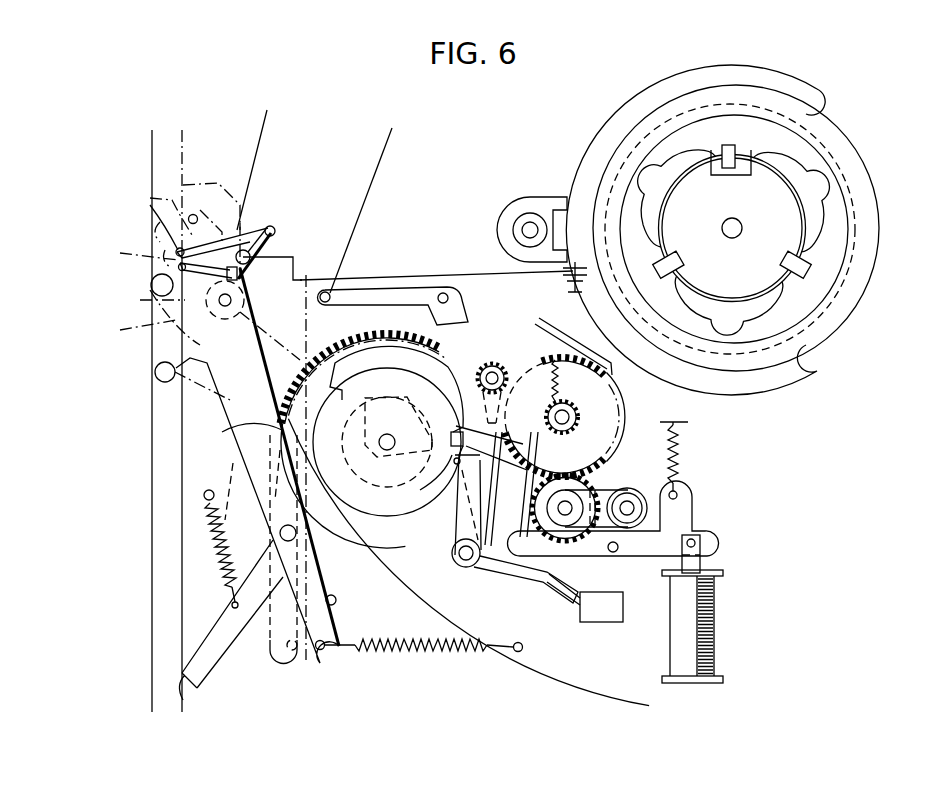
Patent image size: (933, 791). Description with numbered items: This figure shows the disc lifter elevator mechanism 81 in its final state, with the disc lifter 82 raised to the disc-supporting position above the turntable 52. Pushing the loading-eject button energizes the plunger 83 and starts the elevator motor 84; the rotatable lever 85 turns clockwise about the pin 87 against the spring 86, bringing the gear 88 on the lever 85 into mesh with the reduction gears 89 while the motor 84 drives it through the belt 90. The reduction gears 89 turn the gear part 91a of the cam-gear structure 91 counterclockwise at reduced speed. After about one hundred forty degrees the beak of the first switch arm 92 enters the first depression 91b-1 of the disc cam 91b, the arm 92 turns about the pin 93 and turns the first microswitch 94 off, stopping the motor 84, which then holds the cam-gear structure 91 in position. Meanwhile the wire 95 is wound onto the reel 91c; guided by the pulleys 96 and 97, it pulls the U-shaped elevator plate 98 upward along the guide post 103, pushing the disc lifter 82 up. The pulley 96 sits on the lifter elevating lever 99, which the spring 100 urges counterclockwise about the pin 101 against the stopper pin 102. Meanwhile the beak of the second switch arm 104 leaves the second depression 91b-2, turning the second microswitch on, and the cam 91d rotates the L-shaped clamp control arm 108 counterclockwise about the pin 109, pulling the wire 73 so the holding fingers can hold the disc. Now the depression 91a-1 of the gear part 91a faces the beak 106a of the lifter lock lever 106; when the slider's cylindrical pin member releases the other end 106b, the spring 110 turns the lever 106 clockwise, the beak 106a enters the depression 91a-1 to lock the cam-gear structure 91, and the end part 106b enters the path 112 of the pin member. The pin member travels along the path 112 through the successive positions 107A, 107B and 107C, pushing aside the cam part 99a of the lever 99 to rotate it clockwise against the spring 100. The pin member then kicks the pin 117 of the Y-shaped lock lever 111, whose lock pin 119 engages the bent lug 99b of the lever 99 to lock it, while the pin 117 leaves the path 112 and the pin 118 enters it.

The turntable 52 is at (258, 128).
The wire 73 is at (378, 165).
The disc lifter elevator mechanism 81 is at (546, 121).
The disc lifter 82 is at (879, 245).
The plunger 83 is at (715, 605).
The elevator motor 84 is at (643, 486).
The rotatable lever 85 is at (572, 557).
The spring 86 is at (680, 455).
The pin 87 is at (614, 553).
The gear 88 is at (551, 508).
The reduction gears 89 is at (586, 352).
The belt 90 is at (600, 488).
The cam-gear structure 91 is at (342, 348).
The gear part 91a is at (372, 340).
The depression 91a-1 is at (252, 437).
The disc cam 91b is at (402, 538).
The first depression 91b-1 is at (440, 470).
The second depression 91b-2 is at (348, 372).
The reel 91c is at (357, 470).
The cam 91d is at (383, 402).
The first switch arm 92 is at (506, 574).
The pin 93 is at (464, 568).
The first microswitch 94 is at (605, 623).
The wire 95 is at (445, 275).
The pulley 96 is at (258, 311).
The pulley 97 is at (560, 281).
The U-shaped elevator plate 98 is at (676, 84).
The lifter elevating lever 99 is at (221, 387).
The cam part 99a is at (150, 287).
The bent lug 99b is at (297, 260).
The spring 100 is at (419, 652).
The pin 101 is at (280, 533).
The stopper pin 102 is at (337, 601).
The guide post 103 is at (530, 222).
The second switch arm 104 is at (527, 450).
The lifter lock lever 106 is at (232, 640).
The beak 106a is at (214, 479).
The end part 106b is at (190, 688).
The pin member position 107A is at (153, 370).
The pin member position 107B is at (150, 296).
The pin member position 107C is at (165, 212).
The L-shaped clamp control arm 108 is at (386, 290).
The pin 109 is at (449, 298).
The spring 110 is at (215, 535).
The lock lever 111 is at (253, 233).
The path 112 is at (150, 460).
The pin 117 is at (203, 187).
The pin 118 is at (165, 258).
The lock pin 119 is at (276, 228).